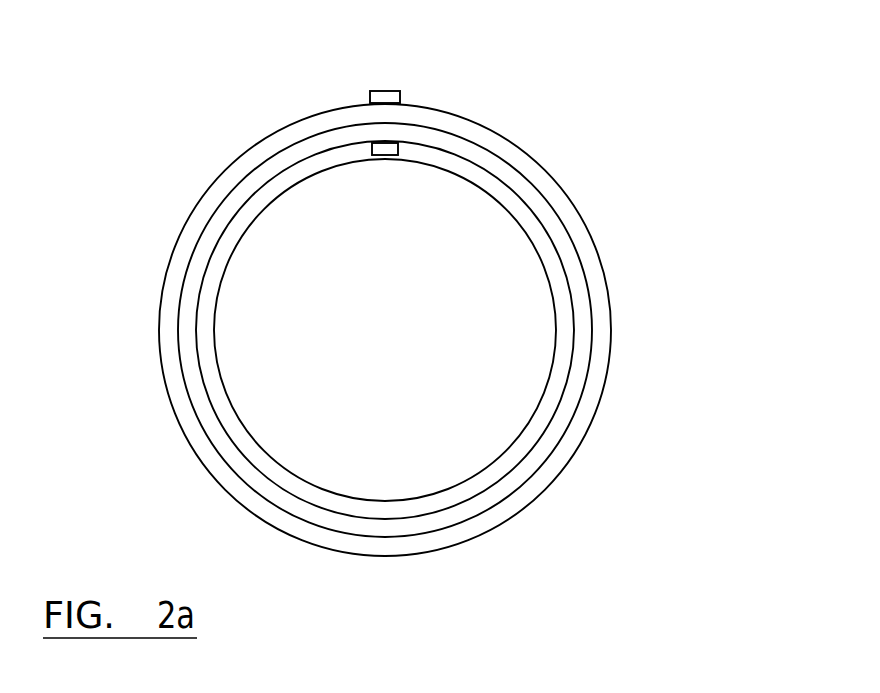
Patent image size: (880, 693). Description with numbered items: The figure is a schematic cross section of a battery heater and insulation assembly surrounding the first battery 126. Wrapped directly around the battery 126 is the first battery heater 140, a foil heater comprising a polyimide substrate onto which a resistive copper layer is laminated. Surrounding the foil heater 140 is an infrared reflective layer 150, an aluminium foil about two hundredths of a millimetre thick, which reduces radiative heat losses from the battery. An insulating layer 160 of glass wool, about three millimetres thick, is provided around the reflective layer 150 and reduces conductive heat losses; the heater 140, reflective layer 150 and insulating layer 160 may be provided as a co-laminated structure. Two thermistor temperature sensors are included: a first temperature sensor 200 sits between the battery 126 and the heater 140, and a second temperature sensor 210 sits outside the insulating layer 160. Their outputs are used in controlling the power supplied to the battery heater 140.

The first battery 126 is at (498, 277).
The first battery heater 140 is at (518, 207).
The reflective layer 150 is at (563, 415).
The insulating layer 160 is at (598, 353).
The first temperature sensor 200 is at (400, 148).
The second temperature sensor 210 is at (388, 91).